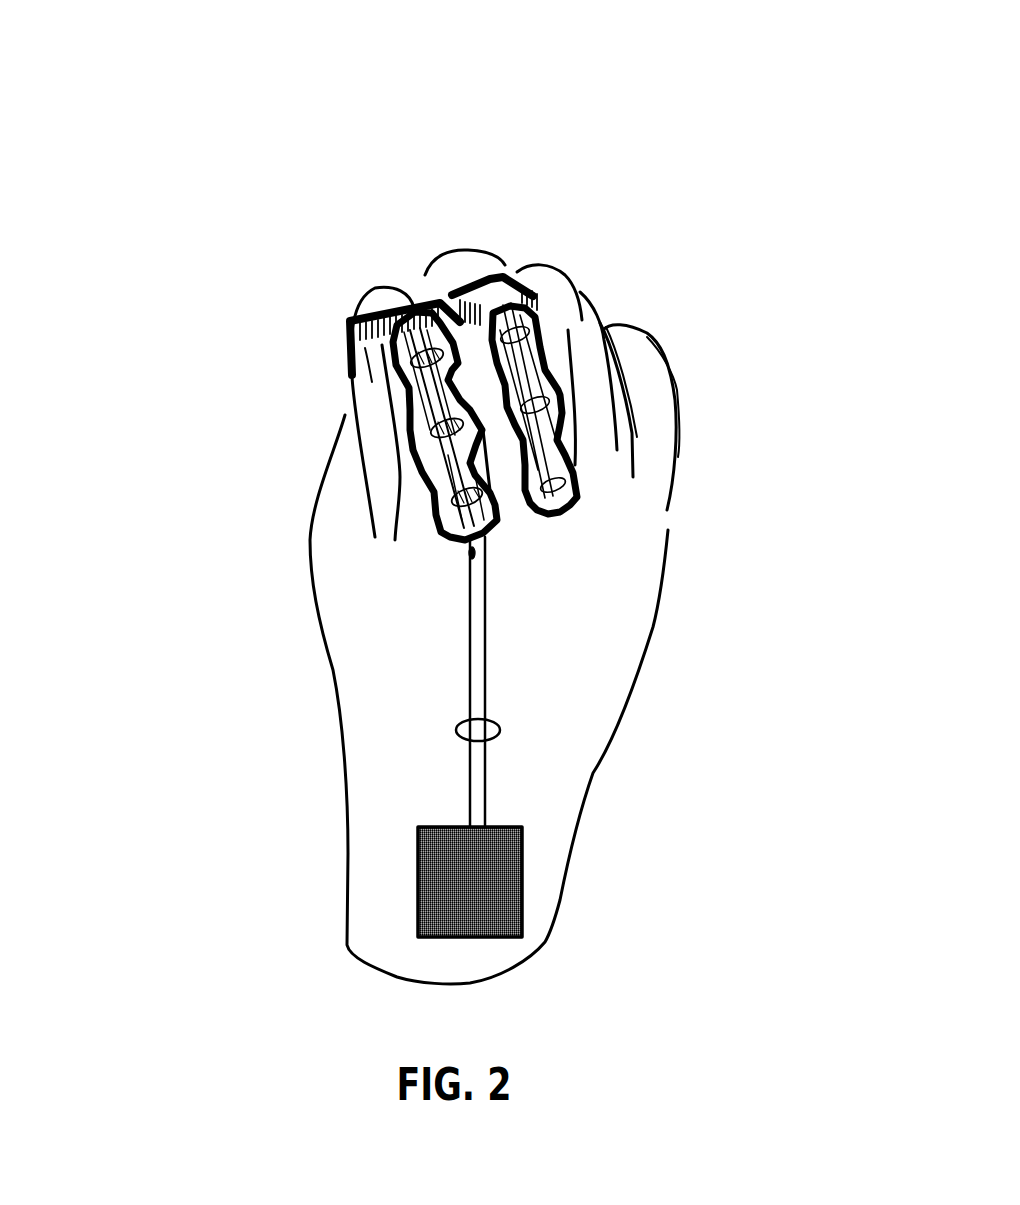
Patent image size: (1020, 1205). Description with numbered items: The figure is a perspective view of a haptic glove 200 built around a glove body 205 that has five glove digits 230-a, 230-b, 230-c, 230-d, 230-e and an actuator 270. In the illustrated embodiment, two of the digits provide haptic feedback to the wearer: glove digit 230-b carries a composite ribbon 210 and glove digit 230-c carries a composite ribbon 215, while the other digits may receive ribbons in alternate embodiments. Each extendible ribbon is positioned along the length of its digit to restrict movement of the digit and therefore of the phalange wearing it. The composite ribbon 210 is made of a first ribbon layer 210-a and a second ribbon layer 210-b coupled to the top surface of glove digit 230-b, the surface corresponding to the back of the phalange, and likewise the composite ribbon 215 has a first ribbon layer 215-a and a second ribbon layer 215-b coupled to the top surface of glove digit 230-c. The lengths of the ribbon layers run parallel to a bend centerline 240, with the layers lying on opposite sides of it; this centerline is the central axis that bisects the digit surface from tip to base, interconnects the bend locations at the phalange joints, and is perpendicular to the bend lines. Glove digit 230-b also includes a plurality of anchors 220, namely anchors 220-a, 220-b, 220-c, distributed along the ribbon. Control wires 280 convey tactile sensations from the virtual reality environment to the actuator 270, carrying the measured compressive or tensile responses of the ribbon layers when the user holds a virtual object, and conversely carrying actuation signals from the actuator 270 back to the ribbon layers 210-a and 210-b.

The haptic glove 200 is at (98, 88).
The glove body 205 is at (401, 840).
The composite ribbon 210 is at (576, 481).
The first ribbon layer 210-a is at (487, 467).
The second ribbon layer 210-b is at (487, 528).
The composite ribbon 215 is at (492, 259).
The first ribbon layer 215-a is at (480, 278).
The second ribbon layer 215-b is at (540, 319).
The anchors 220 is at (272, 550).
The anchor 220-a is at (417, 382).
The anchor 220-b is at (437, 465).
The anchor 220-c is at (467, 537).
The glove digit 230-a is at (347, 432).
The glove digit 230-b is at (372, 302).
The glove digit 230-c is at (547, 356).
The glove digit 230-d is at (608, 422).
The glove digit 230-e is at (650, 440).
The bend centerline 240 is at (370, 364).
The actuator 270 is at (490, 905).
The control wires 280 is at (455, 740).